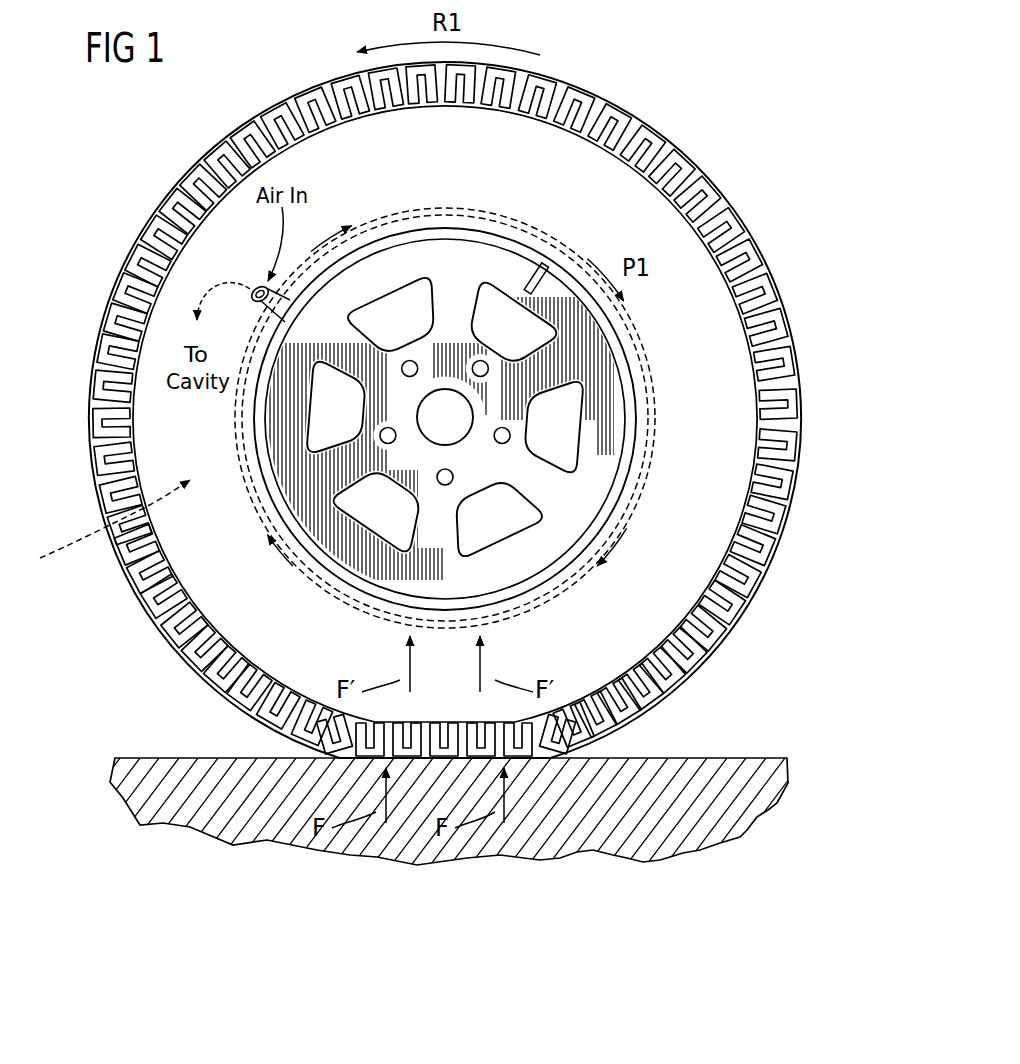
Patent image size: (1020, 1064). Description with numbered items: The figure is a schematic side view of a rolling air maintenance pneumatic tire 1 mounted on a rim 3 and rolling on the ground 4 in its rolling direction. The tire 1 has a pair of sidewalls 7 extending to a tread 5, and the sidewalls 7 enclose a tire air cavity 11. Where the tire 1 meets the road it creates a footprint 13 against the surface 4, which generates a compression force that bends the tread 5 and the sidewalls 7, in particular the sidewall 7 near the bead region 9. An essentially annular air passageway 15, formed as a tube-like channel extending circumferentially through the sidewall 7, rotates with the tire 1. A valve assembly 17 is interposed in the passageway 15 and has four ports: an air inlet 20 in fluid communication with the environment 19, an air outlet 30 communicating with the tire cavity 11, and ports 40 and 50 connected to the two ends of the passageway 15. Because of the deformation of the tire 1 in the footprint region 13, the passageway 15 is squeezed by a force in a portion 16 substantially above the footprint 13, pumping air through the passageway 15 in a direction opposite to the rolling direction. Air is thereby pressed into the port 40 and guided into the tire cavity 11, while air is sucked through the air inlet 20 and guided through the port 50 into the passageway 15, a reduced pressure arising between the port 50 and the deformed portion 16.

The pneumatic tire 1 is at (156, 172).
The rim 3 is at (300, 494).
The ground 4 is at (700, 213).
The tread 5 is at (95, 468).
The sidewalls 7 is at (225, 578).
The bead region 9 is at (345, 598).
The tire air cavity 11 is at (102, 530).
The footprint 13 is at (428, 760).
The air passageway 15 is at (240, 404).
The portion of deformation 16 is at (460, 630).
The valve assembly 17 is at (260, 274).
The environment 19 is at (732, 89).
The air inlet 20 is at (254, 299).
The air outlet 30 is at (250, 286).
The port 40 is at (285, 322).
The port 50 is at (290, 300).